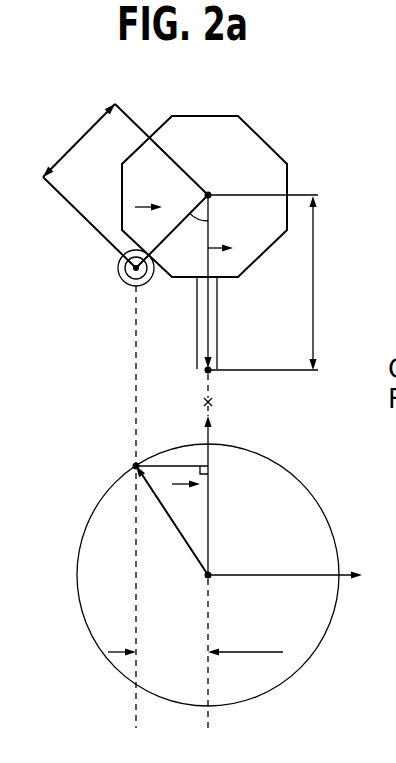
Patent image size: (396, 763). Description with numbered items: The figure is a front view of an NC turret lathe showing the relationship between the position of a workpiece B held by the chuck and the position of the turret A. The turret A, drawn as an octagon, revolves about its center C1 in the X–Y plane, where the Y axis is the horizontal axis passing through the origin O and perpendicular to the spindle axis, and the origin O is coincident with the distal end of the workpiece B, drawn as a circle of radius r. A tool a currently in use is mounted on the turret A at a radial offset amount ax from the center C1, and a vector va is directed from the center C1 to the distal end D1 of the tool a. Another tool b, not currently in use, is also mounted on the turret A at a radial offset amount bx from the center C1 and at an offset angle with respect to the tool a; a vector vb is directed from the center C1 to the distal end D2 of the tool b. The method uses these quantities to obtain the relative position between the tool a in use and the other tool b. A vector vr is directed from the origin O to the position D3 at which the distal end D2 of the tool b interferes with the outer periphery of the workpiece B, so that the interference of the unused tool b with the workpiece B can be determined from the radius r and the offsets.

The turret A is at (262, 138).
The tool not currently in use b is at (117, 274).
The radial offset amount of tool b bx is at (79, 140).
The center of the turret C1 is at (219, 179).
The vector to distal end of tool b vb is at (148, 222).
The vector to distal end of tool a va is at (222, 262).
The tool in use a is at (213, 305).
The radial offset amount of tool a ax is at (277, 282).
The distal end of tool a D1 is at (187, 368).
The distal end of tool b D2 is at (145, 286).
The interference position D3 is at (152, 449).
The vector to interference position vr is at (186, 498).
The radius of the workpiece r is at (146, 472).
The origin O is at (220, 590).
The Y axis Y is at (293, 569).
The workpiece B is at (270, 690).